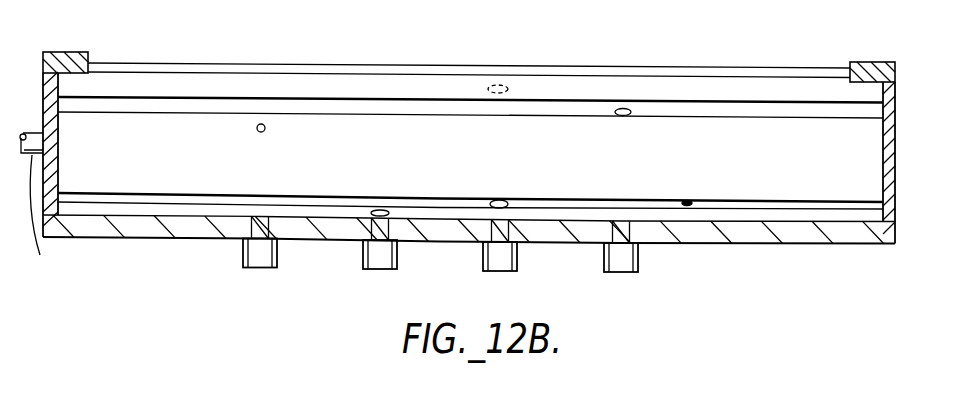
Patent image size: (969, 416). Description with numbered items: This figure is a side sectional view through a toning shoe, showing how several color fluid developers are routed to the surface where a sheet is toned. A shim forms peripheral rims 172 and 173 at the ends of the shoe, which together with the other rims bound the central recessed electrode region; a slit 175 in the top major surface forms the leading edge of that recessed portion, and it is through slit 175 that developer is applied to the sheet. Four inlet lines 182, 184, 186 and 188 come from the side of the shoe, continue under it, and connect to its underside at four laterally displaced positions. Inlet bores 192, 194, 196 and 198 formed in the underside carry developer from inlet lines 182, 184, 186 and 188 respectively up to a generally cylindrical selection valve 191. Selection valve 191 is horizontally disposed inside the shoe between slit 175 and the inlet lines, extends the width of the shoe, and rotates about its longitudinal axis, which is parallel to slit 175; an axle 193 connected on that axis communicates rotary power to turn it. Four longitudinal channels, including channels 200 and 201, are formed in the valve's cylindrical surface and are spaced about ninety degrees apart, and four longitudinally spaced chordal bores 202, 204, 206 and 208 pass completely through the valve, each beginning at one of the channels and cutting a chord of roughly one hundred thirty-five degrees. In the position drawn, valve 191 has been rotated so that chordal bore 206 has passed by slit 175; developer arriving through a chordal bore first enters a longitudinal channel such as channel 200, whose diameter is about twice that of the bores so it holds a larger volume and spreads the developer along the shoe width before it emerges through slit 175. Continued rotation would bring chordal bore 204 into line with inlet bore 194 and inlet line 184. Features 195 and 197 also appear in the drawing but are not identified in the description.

The rim 172 is at (866, 62).
The rim 173 is at (68, 52).
The slit 175 is at (300, 63).
The inlet line 182 is at (255, 269).
The inlet line 184 is at (375, 271).
The inlet line 186 is at (499, 273).
The inlet line 188 is at (619, 274).
The selection valve 191 is at (181, 99).
The inlet bore 192 is at (250, 226).
The axle 193 is at (50, 200).
The inlet bore 194 is at (358, 232).
The left side wall 195 is at (57, 116).
The inlet bore 196 is at (486, 232).
The right side wall 197 is at (885, 154).
The inlet bore 198 is at (630, 231).
The longitudinal channel 200 is at (685, 203).
The longitudinal channel 201 is at (680, 117).
The chordal bore 202 is at (264, 131).
The chordal bore 204 is at (381, 210).
The chordal bore 206 is at (497, 93).
The chordal bore 208 is at (622, 116).